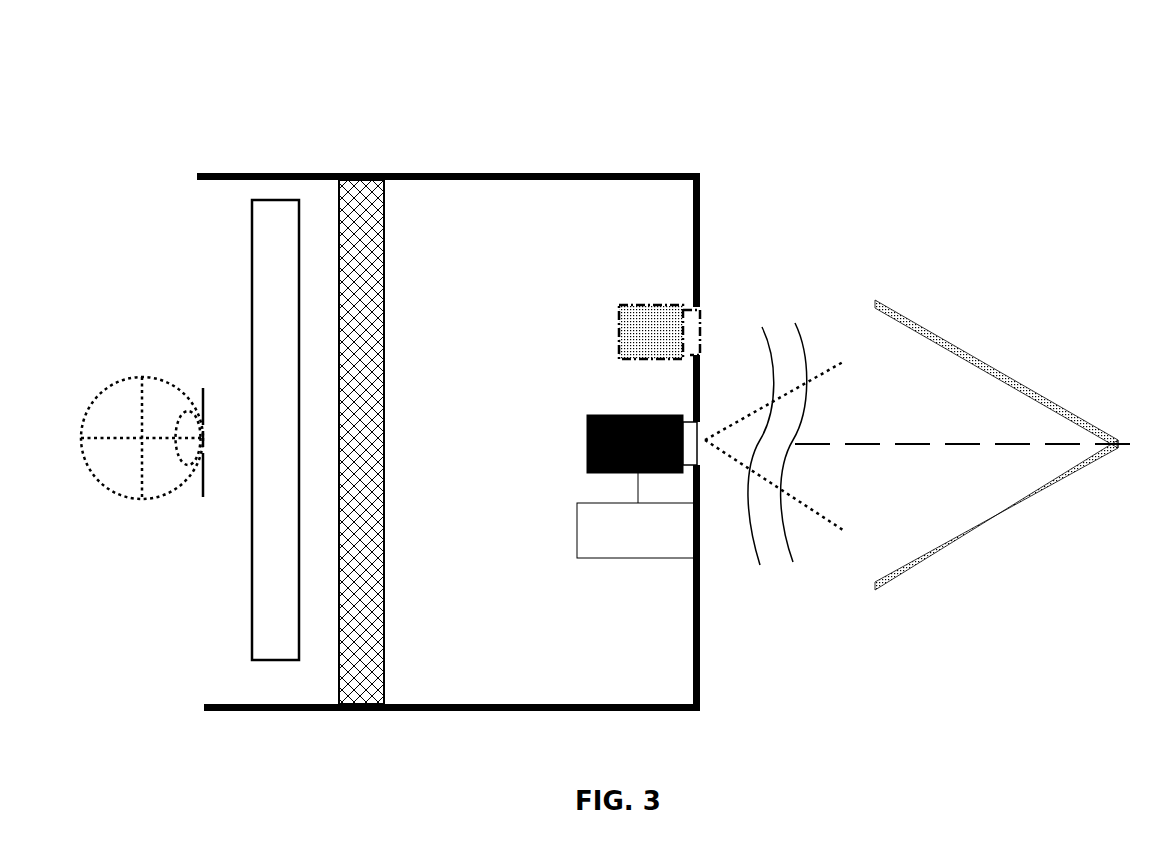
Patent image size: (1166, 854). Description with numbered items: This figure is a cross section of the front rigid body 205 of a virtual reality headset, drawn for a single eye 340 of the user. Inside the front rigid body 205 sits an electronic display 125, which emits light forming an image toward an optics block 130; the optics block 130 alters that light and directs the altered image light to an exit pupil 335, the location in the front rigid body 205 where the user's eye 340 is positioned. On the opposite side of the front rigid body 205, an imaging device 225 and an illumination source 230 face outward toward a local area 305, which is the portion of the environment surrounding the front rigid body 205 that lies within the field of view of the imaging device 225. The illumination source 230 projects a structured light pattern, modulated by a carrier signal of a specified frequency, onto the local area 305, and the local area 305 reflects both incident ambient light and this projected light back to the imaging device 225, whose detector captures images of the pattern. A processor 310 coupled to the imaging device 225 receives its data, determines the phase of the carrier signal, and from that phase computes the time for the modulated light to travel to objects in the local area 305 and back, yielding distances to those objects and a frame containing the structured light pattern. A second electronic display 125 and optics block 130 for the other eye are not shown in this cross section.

The electronic display 125 is at (385, 217).
The optics block 130 is at (289, 669).
The front rigid body 205 is at (669, 711).
The imaging device 225 is at (587, 416).
The illumination source 230 is at (658, 304).
The local area 305 is at (983, 531).
The processor 310 is at (622, 551).
The exit pupil 335 is at (202, 387).
The eye 340 is at (111, 492).